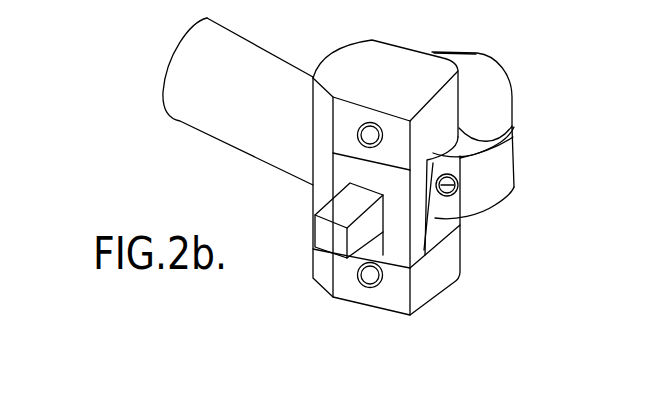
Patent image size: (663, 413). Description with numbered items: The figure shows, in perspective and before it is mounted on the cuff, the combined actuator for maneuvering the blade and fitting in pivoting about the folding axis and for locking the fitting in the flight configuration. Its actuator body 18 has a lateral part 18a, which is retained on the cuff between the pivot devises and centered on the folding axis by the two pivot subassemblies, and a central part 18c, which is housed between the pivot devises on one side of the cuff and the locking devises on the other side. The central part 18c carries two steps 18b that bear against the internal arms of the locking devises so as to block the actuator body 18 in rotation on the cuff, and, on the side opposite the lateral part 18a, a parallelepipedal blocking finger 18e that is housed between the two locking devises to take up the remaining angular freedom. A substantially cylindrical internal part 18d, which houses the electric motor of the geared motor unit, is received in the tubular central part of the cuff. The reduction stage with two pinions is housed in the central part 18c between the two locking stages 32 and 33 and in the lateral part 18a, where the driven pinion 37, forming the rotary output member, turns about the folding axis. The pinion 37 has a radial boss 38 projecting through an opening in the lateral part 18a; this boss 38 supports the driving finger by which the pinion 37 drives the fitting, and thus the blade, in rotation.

The actuator body 18 is at (409, 41).
The lateral part 18a is at (485, 75).
The steps 18b is at (350, 116).
The central part 18c is at (435, 228).
The cylindrical internal part 18d is at (205, 98).
The blocking finger 18e is at (330, 233).
The locking stage 32 is at (432, 123).
The locking stage 33 is at (437, 282).
The driven pinion 37 is at (483, 167).
The radial boss 38 is at (458, 187).